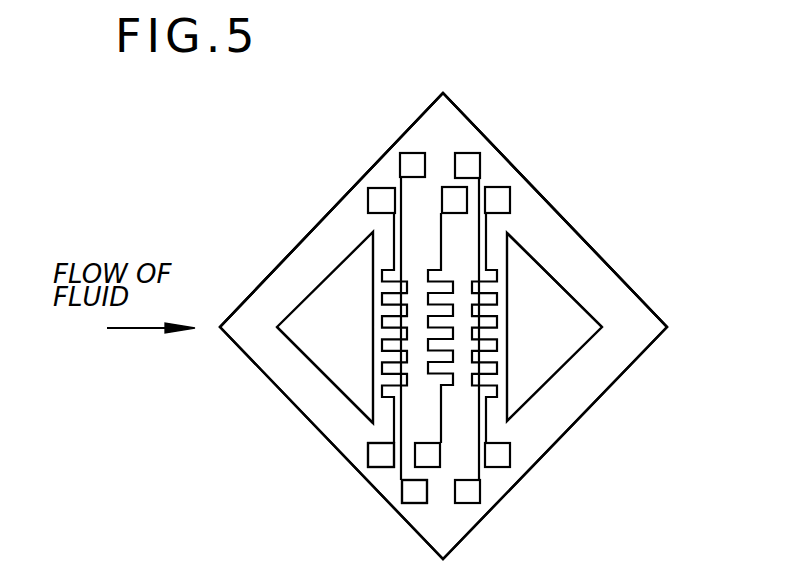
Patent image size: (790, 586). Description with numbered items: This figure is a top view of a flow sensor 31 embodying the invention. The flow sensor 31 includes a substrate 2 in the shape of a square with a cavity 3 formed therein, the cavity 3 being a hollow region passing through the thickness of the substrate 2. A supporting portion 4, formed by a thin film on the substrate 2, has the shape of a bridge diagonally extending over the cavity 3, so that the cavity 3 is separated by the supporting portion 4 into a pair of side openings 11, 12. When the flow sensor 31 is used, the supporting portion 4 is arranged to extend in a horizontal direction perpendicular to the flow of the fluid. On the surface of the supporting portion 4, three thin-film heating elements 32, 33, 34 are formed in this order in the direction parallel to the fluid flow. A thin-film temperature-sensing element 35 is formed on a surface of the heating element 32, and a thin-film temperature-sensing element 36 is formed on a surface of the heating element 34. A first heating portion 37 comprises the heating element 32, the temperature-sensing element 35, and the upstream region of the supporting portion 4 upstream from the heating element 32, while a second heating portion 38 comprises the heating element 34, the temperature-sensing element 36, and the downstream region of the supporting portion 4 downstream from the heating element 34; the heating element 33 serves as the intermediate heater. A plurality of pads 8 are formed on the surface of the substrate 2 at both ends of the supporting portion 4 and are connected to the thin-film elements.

The substrate 2 is at (623, 313).
The cavity 3 is at (563, 307).
The supporting portion 4 is at (380, 378).
The pads 8 is at (393, 468).
The side opening 11 is at (306, 310).
The side opening 12 is at (545, 271).
The flow sensor 31 is at (562, 141).
The thin-film heating element 32 is at (382, 299).
The thin-film heating element 33 is at (453, 291).
The thin-film heating element 34 is at (497, 388).
The thin-film temperature-sensing element 35 is at (383, 324).
The thin-film temperature-sensing element 36 is at (495, 324).
The first heating portion 37 is at (355, 153).
The second heating portion 38 is at (509, 139).